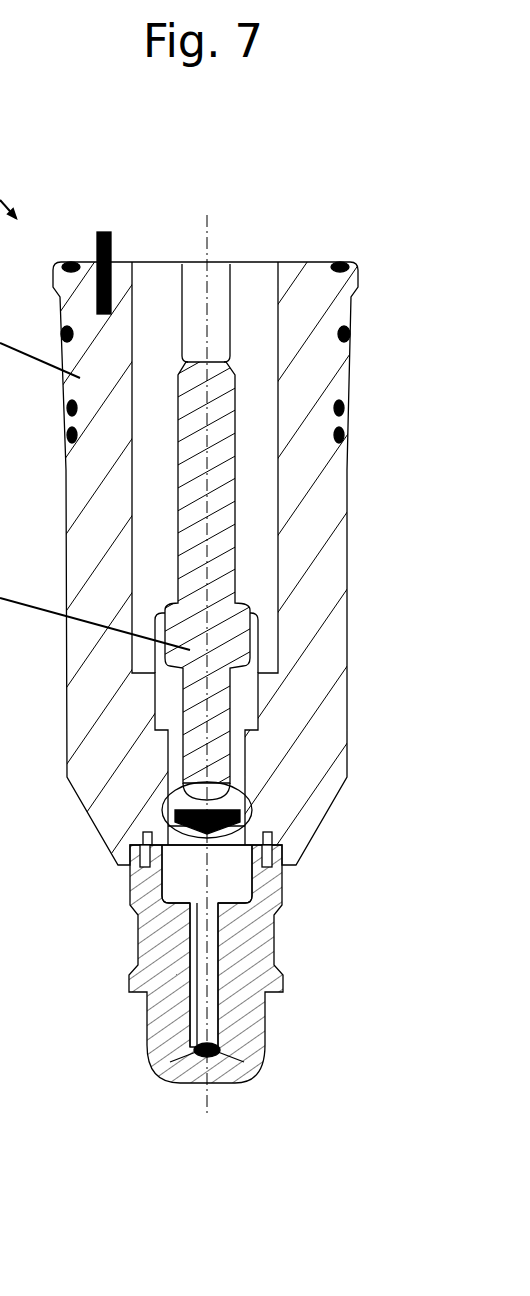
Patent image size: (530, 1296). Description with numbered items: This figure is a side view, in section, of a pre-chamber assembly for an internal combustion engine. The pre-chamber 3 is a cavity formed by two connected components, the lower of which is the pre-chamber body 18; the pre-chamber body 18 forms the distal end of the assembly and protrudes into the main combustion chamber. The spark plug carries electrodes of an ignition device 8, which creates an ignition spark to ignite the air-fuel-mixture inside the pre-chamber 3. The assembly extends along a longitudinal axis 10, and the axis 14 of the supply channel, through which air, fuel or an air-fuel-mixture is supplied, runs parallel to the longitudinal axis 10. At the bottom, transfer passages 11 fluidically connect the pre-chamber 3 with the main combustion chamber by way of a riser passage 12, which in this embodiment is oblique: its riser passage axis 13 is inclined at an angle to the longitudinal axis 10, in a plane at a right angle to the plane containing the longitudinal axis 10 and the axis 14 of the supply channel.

The longitudinal axis 10 is at (203, 236).
The axis of the supply channel 14 is at (128, 552).
The ignition device 8 is at (257, 813).
The pre-chamber 3 is at (217, 870).
The riser passage axis 13 is at (190, 923).
The riser passage 12 is at (195, 1003).
The pre-chamber body 18 is at (253, 1027).
The transfer passages 11 is at (232, 1052).